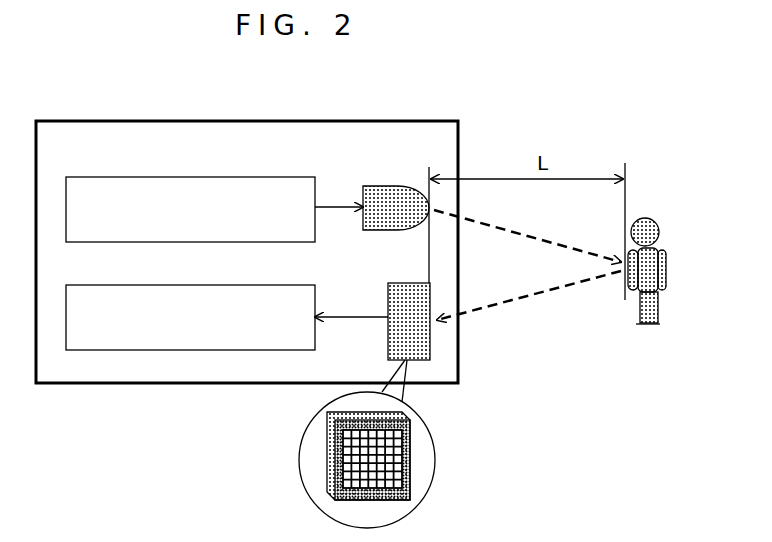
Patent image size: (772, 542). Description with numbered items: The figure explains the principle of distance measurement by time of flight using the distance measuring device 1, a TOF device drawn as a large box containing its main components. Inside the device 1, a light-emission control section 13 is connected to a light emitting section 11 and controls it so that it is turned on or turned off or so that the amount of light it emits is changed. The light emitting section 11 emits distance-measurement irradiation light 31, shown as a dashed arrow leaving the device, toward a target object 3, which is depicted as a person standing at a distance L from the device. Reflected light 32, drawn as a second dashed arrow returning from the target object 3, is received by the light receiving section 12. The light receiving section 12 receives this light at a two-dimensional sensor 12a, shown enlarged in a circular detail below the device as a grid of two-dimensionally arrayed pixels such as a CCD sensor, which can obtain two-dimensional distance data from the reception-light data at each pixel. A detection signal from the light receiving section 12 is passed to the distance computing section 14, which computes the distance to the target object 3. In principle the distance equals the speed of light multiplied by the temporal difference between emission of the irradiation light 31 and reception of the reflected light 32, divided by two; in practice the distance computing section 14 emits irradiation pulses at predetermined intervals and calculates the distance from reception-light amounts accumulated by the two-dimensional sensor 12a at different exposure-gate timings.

The distance measuring device 1 is at (242, 121).
The light emitting section 11 is at (392, 186).
The light receiving section 12 is at (388, 340).
The two-dimensional sensor 12a is at (300, 471).
The light-emission control section 13 is at (221, 177).
The distance computing section 14 is at (222, 285).
The target object 3 is at (670, 265).
The irradiation light 31 is at (527, 235).
The reflected light 32 is at (529, 298).